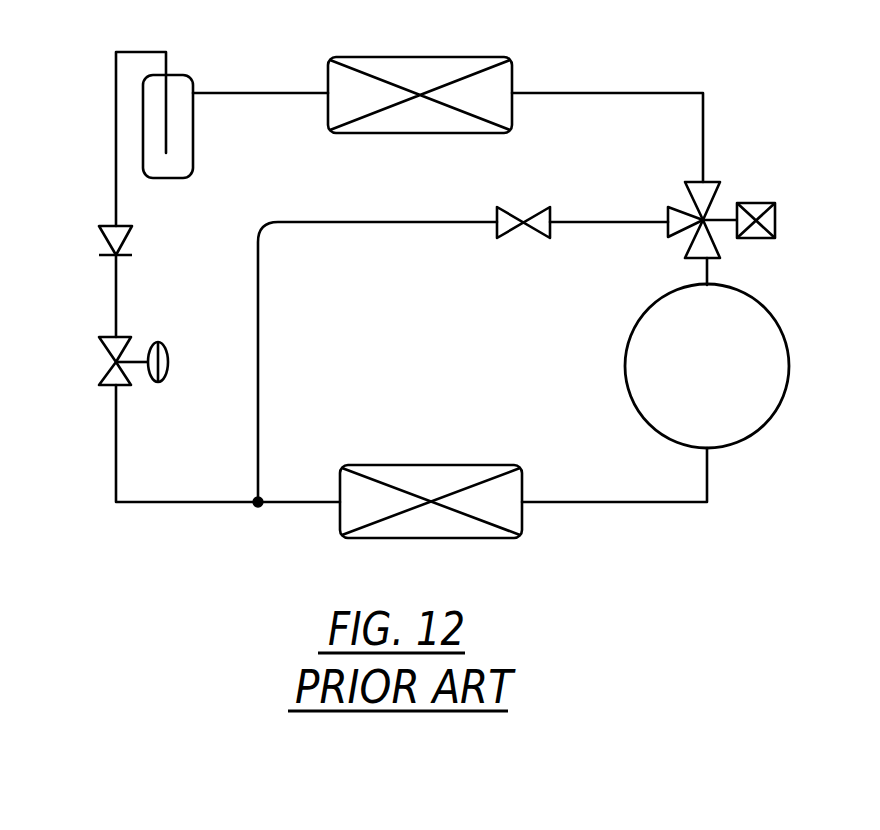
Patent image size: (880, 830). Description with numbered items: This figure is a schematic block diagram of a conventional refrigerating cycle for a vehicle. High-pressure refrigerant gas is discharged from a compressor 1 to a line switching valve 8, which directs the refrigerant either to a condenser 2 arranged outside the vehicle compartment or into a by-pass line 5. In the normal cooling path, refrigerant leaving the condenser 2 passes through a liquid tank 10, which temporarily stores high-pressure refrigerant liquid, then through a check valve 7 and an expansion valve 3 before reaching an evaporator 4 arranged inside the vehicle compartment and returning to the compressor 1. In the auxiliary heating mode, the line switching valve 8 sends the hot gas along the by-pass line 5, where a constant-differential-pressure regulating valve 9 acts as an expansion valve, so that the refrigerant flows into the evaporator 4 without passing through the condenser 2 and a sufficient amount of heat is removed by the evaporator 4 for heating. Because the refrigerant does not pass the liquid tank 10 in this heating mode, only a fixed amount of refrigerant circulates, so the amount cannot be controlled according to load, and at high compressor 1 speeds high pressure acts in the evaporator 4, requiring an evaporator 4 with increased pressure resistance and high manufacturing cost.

The compressor 1 is at (778, 328).
The condenser 2 is at (448, 18).
The expansion valve 3 is at (108, 348).
The evaporator 4 is at (473, 427).
The by-pass line 5 is at (360, 222).
The check valve 7 is at (125, 243).
The line switching valve 8 is at (712, 212).
The constant-differential-pressure regulating valve 9 is at (535, 207).
The liquid tank 10 is at (193, 158).